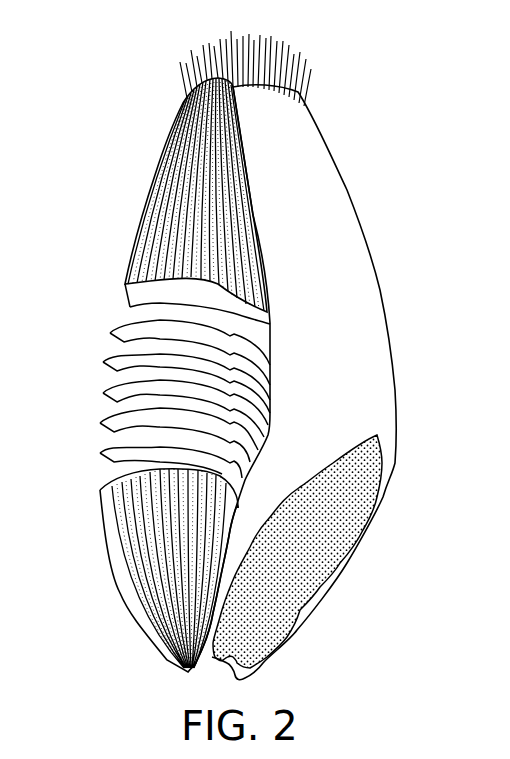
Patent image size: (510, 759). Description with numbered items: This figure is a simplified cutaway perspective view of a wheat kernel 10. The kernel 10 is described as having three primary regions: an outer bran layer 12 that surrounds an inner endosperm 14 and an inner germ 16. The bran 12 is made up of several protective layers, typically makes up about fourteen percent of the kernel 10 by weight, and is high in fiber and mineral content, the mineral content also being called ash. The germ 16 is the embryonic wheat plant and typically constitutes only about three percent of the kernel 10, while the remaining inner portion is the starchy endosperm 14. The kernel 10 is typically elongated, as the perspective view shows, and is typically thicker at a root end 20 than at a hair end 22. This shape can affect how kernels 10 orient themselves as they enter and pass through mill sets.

The wheat kernel 10 is at (373, 78).
The outer bran layer 12 is at (100, 490).
The inner endosperm 14 is at (320, 202).
The inner germ 16 is at (282, 612).
The root end 20 is at (130, 541).
The hair end 22 is at (180, 135).